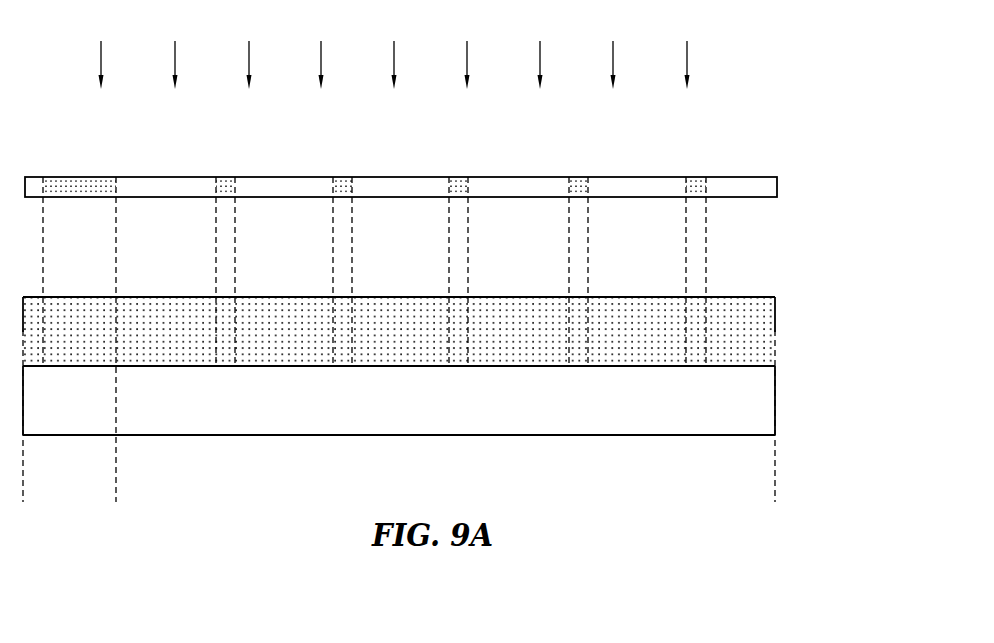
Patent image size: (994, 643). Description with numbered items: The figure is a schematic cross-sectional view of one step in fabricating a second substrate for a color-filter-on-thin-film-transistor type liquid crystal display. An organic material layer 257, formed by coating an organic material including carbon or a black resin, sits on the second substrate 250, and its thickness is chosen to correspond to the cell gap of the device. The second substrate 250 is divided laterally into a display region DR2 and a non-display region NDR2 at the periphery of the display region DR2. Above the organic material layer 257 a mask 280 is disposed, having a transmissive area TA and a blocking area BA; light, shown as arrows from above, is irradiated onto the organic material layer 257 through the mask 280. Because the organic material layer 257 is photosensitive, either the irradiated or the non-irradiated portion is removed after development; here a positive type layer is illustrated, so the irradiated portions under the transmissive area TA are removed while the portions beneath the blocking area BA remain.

The mask 280 is at (440, 134).
The organic material layer 257 is at (759, 316).
The second substrate 250 is at (406, 413).
The transmissive area TA is at (399, 188).
The blocking area BA is at (460, 184).
The non-display region NDR2 is at (116, 491).
The display region DR2 is at (775, 491).